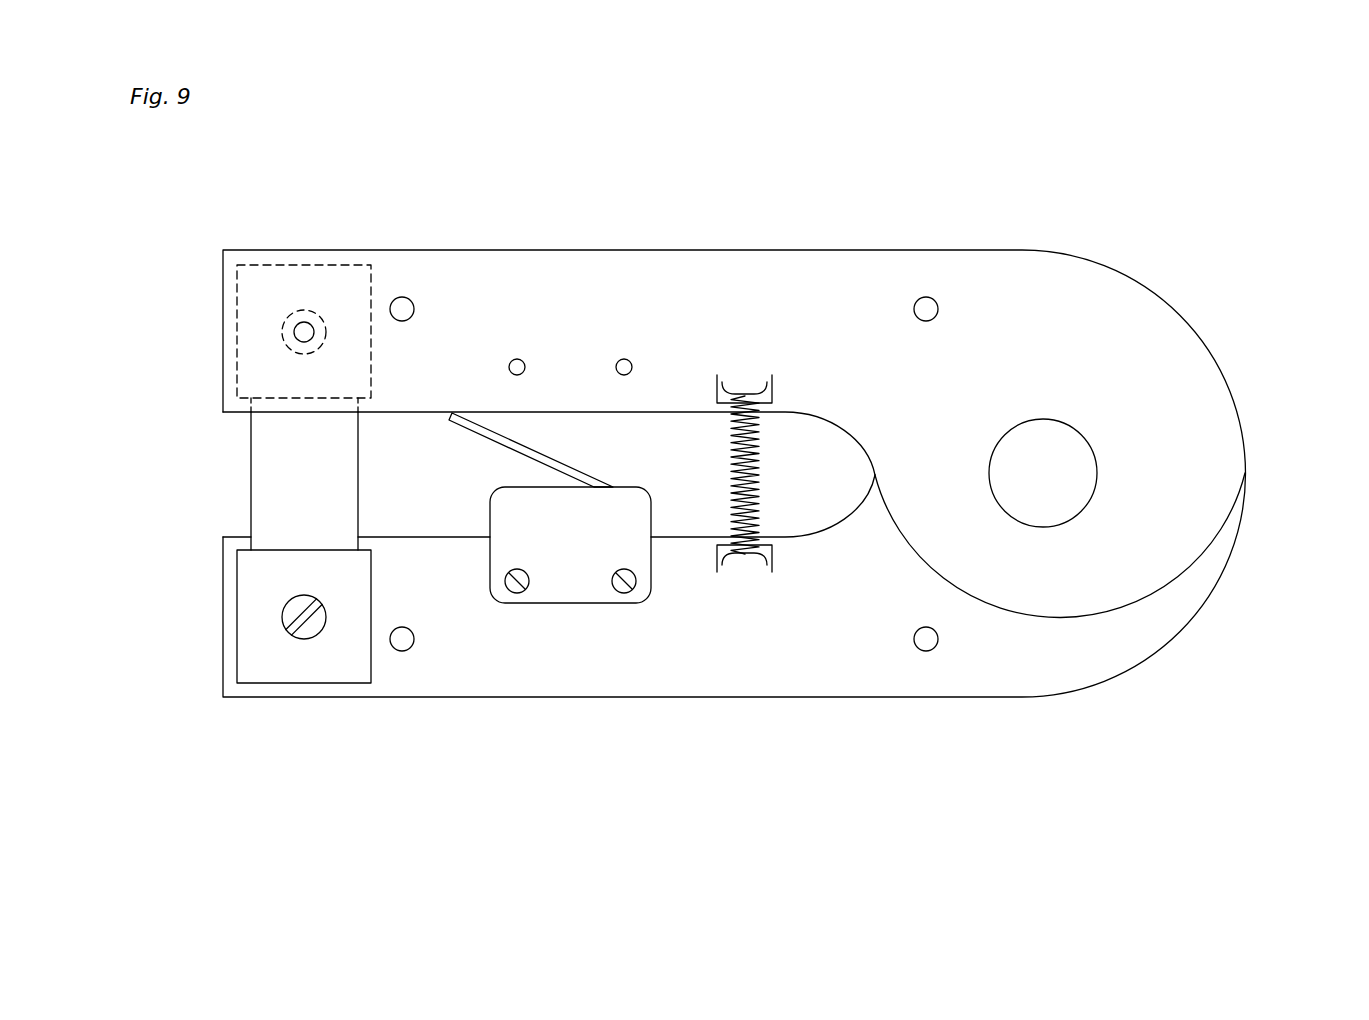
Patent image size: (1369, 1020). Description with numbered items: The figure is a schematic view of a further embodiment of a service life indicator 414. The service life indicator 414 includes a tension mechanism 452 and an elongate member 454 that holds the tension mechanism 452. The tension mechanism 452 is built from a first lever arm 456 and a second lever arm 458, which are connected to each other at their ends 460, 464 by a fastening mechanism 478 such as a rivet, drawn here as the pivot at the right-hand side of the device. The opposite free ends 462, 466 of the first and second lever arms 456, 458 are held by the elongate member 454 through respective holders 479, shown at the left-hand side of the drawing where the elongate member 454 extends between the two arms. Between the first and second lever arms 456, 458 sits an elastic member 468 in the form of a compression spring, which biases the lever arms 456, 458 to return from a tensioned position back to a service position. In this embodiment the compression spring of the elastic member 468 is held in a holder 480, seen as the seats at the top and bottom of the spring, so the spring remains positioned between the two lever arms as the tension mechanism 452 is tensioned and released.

The service life indicator 414 is at (978, 180).
The tension mechanism 452 is at (1078, 717).
The elongate member 454 is at (250, 450).
The first lever arm 456 is at (542, 250).
The second lever arm 458 is at (655, 698).
The end of first lever arm 460 is at (1233, 368).
The free end of first lever arm 462 is at (257, 249).
The end of second lever arm 464 is at (1185, 650).
The free end of second lever arm 466 is at (250, 697).
The elastic member 468 is at (762, 512).
The fastening mechanism 478 is at (1050, 420).
The holder 479 is at (237, 646).
The holder 480 is at (750, 567).